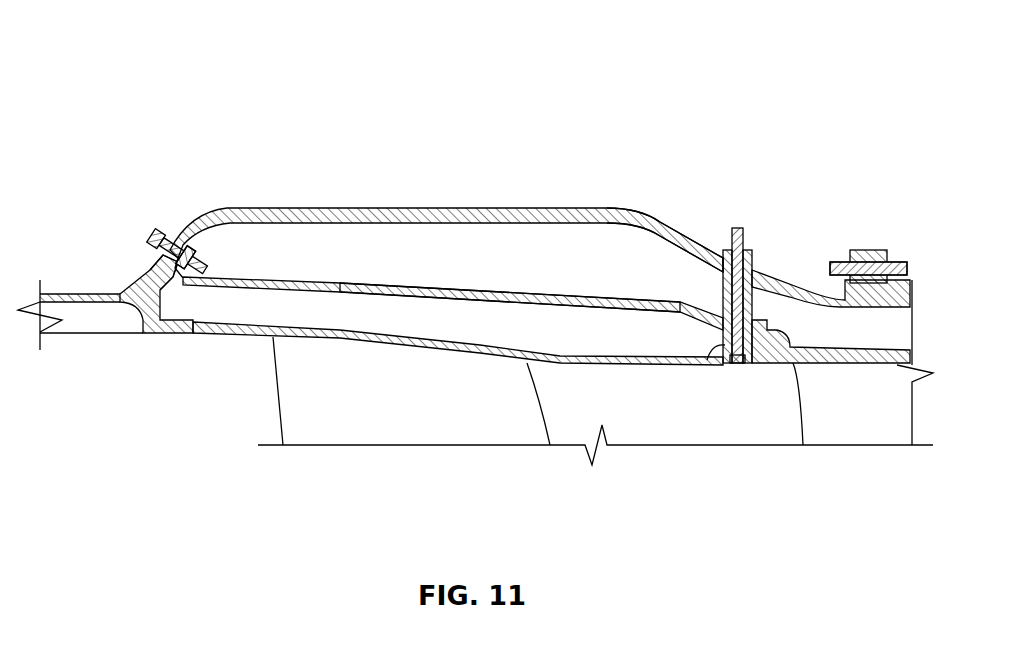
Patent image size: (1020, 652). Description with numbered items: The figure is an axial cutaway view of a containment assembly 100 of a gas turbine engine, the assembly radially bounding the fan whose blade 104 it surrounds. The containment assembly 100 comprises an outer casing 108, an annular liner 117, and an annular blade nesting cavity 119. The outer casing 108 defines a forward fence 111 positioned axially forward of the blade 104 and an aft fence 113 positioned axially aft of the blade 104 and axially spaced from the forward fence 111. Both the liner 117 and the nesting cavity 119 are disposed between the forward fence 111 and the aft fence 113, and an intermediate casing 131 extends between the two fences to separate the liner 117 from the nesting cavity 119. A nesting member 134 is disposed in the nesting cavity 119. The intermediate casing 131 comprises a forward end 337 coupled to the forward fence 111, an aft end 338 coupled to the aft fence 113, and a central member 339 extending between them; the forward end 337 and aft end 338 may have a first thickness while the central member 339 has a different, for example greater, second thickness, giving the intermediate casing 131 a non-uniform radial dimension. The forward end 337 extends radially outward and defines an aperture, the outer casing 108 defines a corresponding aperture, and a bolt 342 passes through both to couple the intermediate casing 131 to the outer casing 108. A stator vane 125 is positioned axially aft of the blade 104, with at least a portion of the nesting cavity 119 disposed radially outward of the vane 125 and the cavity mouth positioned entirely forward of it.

The containment assembly 100 is at (126, 38).
The blade 104 is at (386, 407).
The outer casing 108 is at (678, 222).
The forward fence 111 is at (163, 328).
The aft fence 113 is at (722, 345).
The liner 117 is at (413, 330).
The nesting cavity 119 is at (404, 222).
The stator vane 125 is at (851, 413).
The intermediate casing 131 is at (300, 277).
The nesting member 134 is at (583, 265).
The forward end 337 is at (163, 277).
The aft end 338 is at (725, 295).
The central member 339 is at (538, 300).
The bolt 342 is at (160, 228).